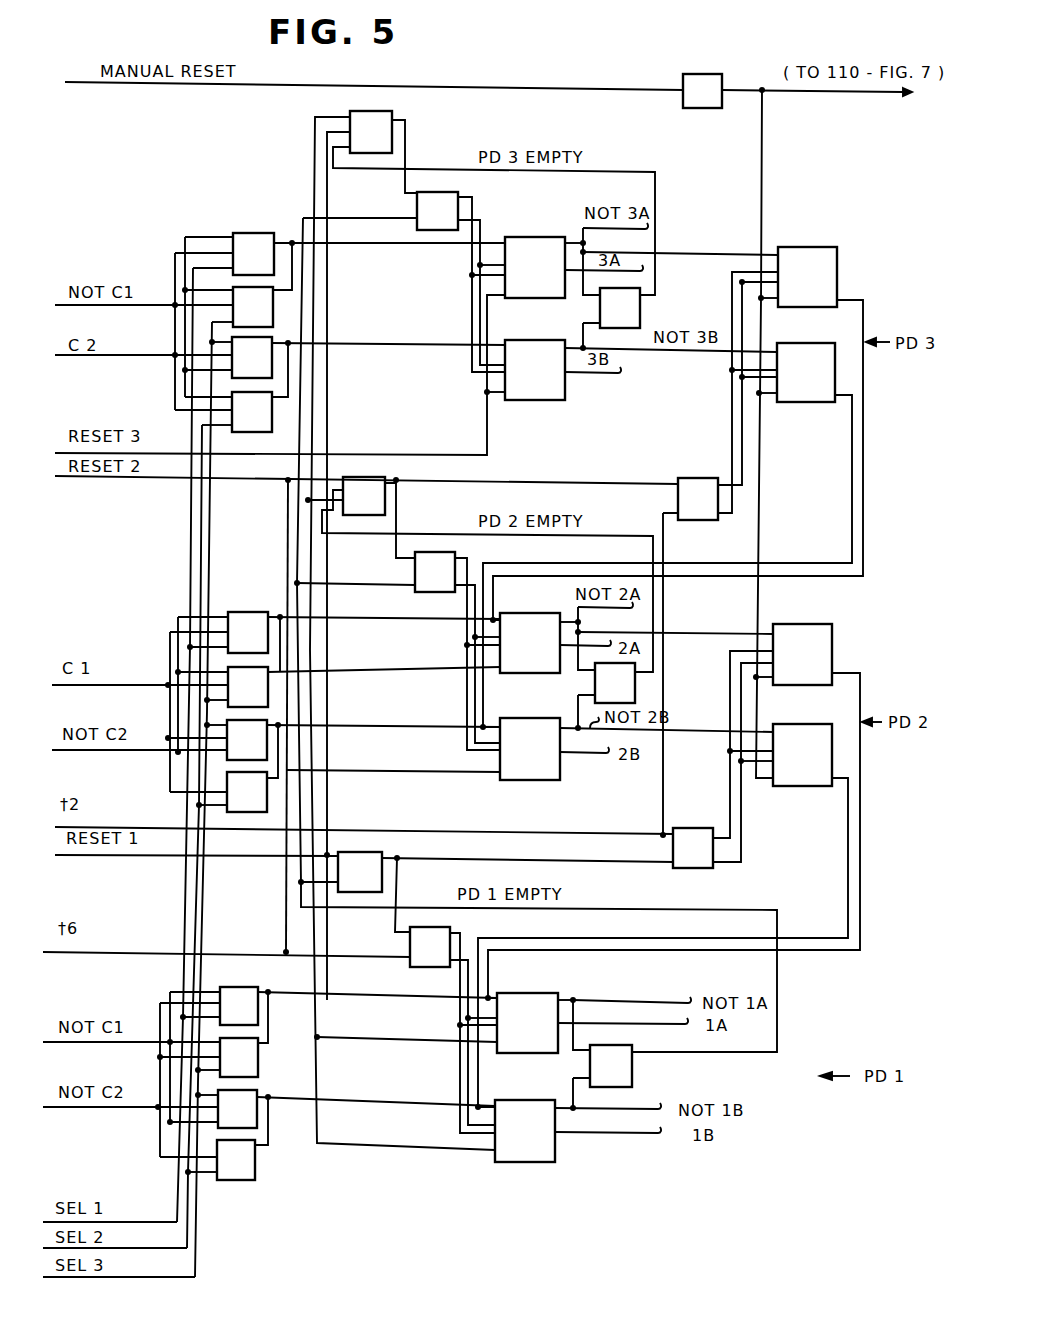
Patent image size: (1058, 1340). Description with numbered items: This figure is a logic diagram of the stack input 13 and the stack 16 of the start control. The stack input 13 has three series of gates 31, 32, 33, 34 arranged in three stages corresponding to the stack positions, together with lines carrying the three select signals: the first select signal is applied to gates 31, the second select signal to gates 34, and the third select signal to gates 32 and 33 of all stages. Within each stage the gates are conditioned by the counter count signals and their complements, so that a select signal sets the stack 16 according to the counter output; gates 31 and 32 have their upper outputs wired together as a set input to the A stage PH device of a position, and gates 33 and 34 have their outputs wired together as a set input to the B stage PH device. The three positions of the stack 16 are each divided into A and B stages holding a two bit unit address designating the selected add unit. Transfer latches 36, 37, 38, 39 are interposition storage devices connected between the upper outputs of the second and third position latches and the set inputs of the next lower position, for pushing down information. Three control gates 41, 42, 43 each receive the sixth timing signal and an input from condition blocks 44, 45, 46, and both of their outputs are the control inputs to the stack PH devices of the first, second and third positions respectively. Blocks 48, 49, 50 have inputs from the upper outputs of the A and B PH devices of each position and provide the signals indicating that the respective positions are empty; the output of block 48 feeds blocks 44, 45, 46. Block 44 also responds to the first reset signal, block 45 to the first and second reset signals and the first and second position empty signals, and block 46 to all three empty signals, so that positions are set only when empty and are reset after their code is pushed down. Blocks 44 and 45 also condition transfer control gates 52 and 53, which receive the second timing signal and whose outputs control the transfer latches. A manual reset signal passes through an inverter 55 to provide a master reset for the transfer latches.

The stack input 13 is at (235, 1196).
The stack 16 is at (525, 1176).
The gate 31 is at (266, 233).
The gate 32 is at (273, 305).
The gate 33 is at (272, 370).
The gate 34 is at (272, 420).
The transfer latch 36 is at (832, 638).
The transfer latch 37 is at (785, 786).
The transfer latch 38 is at (837, 256).
The transfer latch 39 is at (792, 402).
The control gate 41 is at (410, 946).
The control gate 42 is at (415, 573).
The control gate 43 is at (417, 201).
The condition block 44 is at (382, 849).
The condition block 45 is at (385, 497).
The condition block 46 is at (392, 113).
The block 48 is at (632, 1070).
The block 49 is at (595, 680).
The block 50 is at (598, 308).
The transfer control gate 52 is at (682, 828).
The transfer control gate 53 is at (693, 480).
The inverter 55 is at (685, 76).